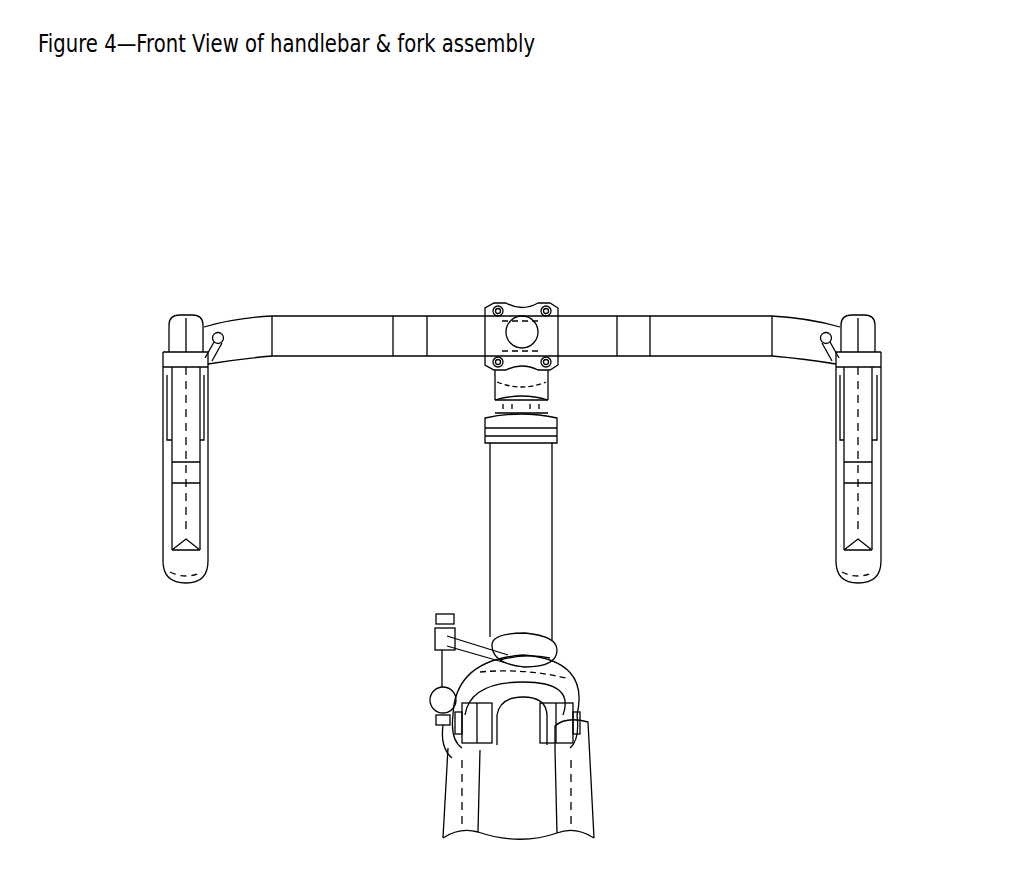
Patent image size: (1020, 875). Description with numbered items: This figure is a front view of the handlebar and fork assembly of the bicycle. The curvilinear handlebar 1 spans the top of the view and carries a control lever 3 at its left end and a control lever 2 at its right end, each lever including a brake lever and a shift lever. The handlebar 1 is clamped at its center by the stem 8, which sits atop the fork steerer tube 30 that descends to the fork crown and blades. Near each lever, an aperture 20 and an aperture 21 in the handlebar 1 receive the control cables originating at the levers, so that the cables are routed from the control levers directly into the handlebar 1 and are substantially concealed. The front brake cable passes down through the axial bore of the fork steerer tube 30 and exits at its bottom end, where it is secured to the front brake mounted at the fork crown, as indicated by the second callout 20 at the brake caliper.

The handlebar 1 is at (346, 314).
The right brake lever 2 is at (859, 312).
The left brake lever 3 is at (172, 316).
The stem 8 is at (524, 305).
The aperture 20 is at (223, 361).
The shift cable 21 is at (829, 359).
The control cable 30 is at (489, 586).